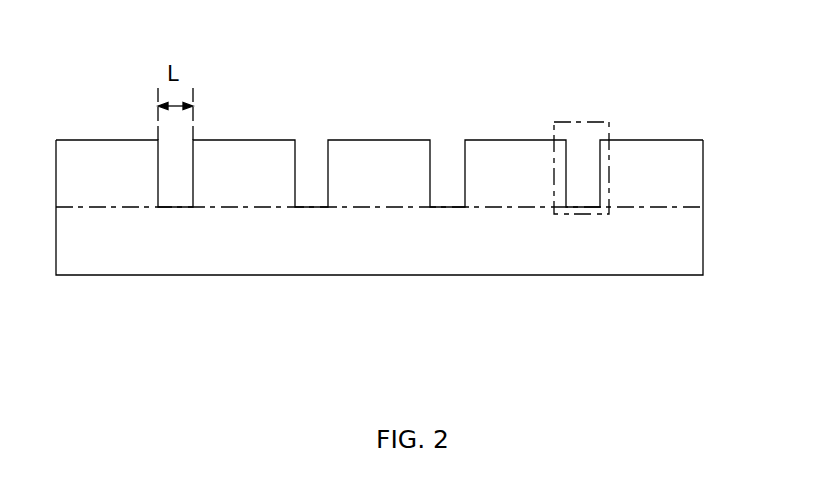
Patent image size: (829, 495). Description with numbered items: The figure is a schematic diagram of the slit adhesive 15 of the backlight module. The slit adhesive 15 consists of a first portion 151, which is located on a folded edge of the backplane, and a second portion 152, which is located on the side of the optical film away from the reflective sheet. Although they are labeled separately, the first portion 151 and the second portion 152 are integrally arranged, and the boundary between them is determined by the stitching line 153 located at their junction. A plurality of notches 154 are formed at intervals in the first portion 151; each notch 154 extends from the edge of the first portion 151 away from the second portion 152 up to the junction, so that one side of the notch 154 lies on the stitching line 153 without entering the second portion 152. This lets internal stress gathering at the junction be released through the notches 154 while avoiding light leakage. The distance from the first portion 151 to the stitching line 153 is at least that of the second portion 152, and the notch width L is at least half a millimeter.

The slit adhesive 15 is at (408, 271).
The first portion 151 is at (687, 178).
The second portion 152 is at (687, 253).
The stitching line 153 is at (687, 209).
The notch 154 is at (610, 122).